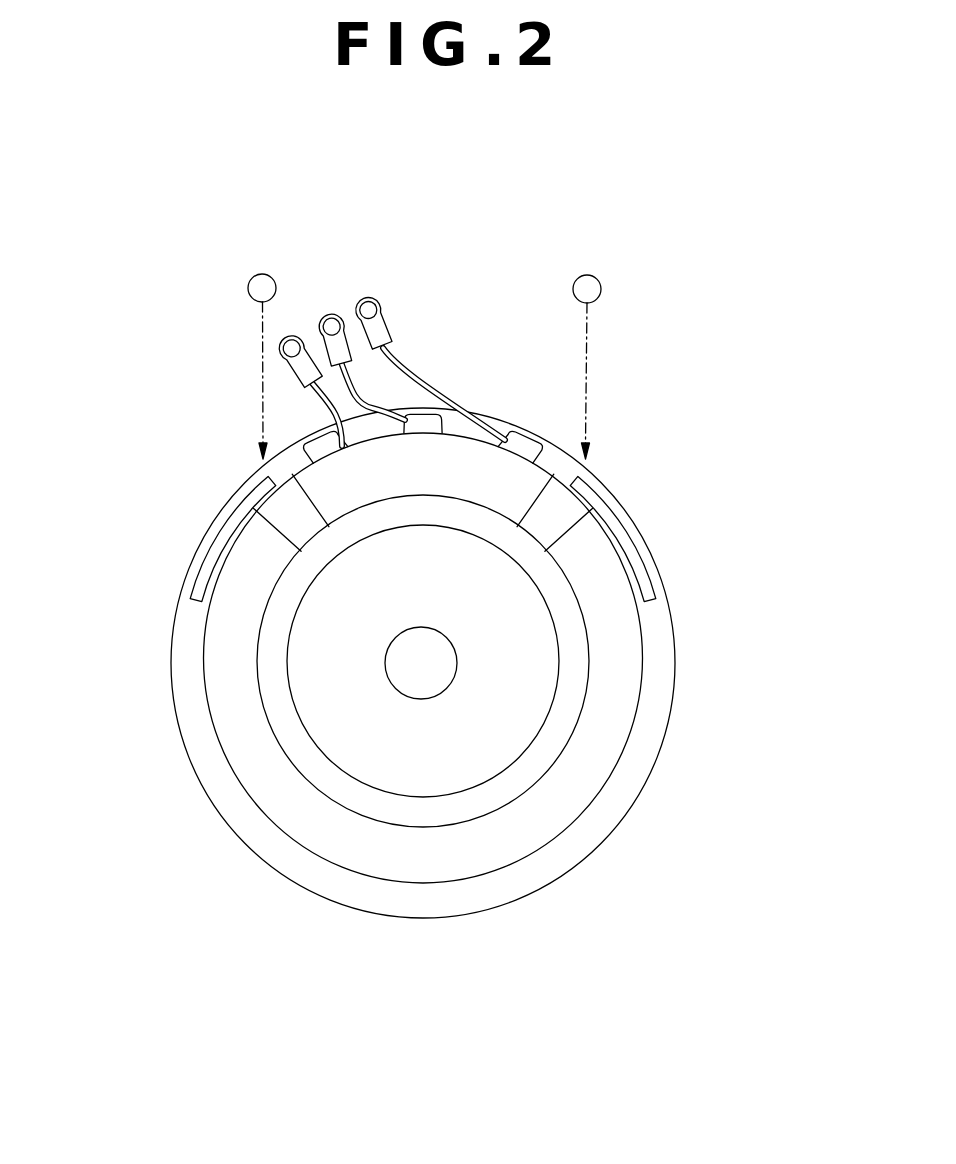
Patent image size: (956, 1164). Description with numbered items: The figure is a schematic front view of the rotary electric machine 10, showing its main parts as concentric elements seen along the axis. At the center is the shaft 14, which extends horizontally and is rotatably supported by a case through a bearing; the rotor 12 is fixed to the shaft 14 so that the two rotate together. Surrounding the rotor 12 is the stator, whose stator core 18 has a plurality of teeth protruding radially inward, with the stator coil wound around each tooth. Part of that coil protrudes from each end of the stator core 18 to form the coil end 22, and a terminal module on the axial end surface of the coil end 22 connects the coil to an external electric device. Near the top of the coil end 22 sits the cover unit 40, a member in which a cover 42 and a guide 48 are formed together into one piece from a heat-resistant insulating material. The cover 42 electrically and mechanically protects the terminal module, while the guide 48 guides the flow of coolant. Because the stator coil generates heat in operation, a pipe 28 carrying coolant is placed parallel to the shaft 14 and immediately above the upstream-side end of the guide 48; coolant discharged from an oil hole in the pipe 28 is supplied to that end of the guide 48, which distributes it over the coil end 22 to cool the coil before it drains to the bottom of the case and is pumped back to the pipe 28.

The rotary electric machine 10 is at (675, 258).
The rotor 12 is at (447, 777).
The shaft 14 is at (410, 677).
The stator core 18 is at (620, 823).
The coil end 22 is at (245, 763).
The pipe 28 is at (261, 282).
The cover unit 40 is at (507, 412).
The cover 42 is at (465, 455).
The guide 48 is at (222, 506).